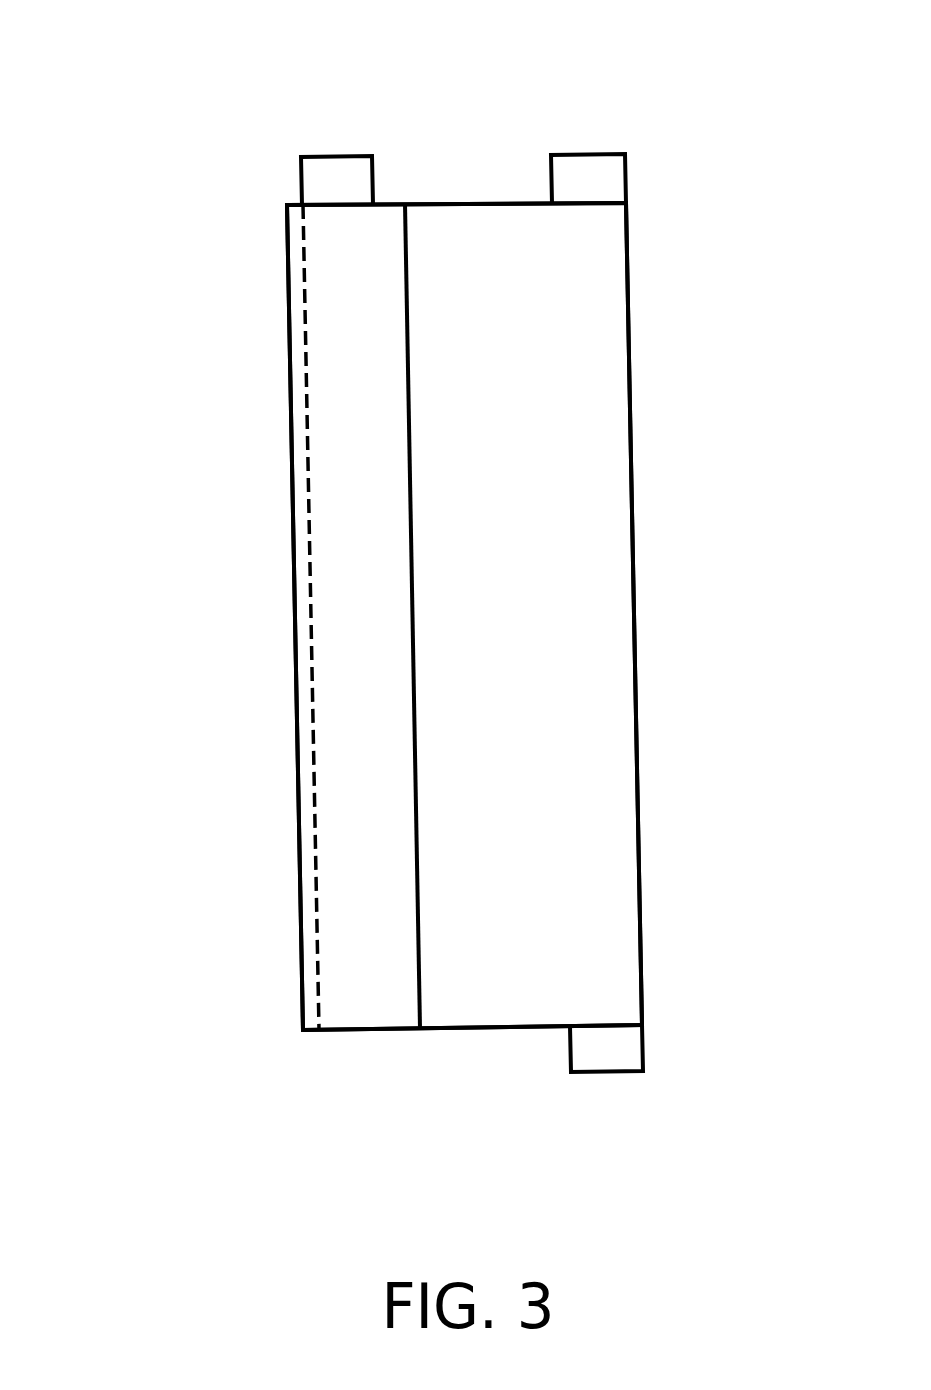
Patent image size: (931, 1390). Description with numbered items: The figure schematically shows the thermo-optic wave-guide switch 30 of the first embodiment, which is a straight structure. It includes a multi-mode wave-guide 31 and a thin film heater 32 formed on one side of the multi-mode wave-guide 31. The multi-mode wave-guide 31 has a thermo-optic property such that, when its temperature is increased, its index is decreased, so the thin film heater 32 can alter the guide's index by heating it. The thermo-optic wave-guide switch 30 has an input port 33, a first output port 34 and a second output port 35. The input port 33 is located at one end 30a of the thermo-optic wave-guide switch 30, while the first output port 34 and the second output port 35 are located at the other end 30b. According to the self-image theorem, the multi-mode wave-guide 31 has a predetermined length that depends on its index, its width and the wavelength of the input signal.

The thermo-optic wave-guide switch 30 is at (35, 37).
The one end of the thermo-optic wave-guide switch 30a is at (490, 1030).
The other end of the thermo-optic wave-guide switch 30b is at (475, 202).
The multi-mode wave-guide 31 is at (633, 615).
The thin film heater 32 is at (293, 620).
The input port 33 is at (627, 1048).
The first output port 34 is at (340, 165).
The second output port 35 is at (592, 162).